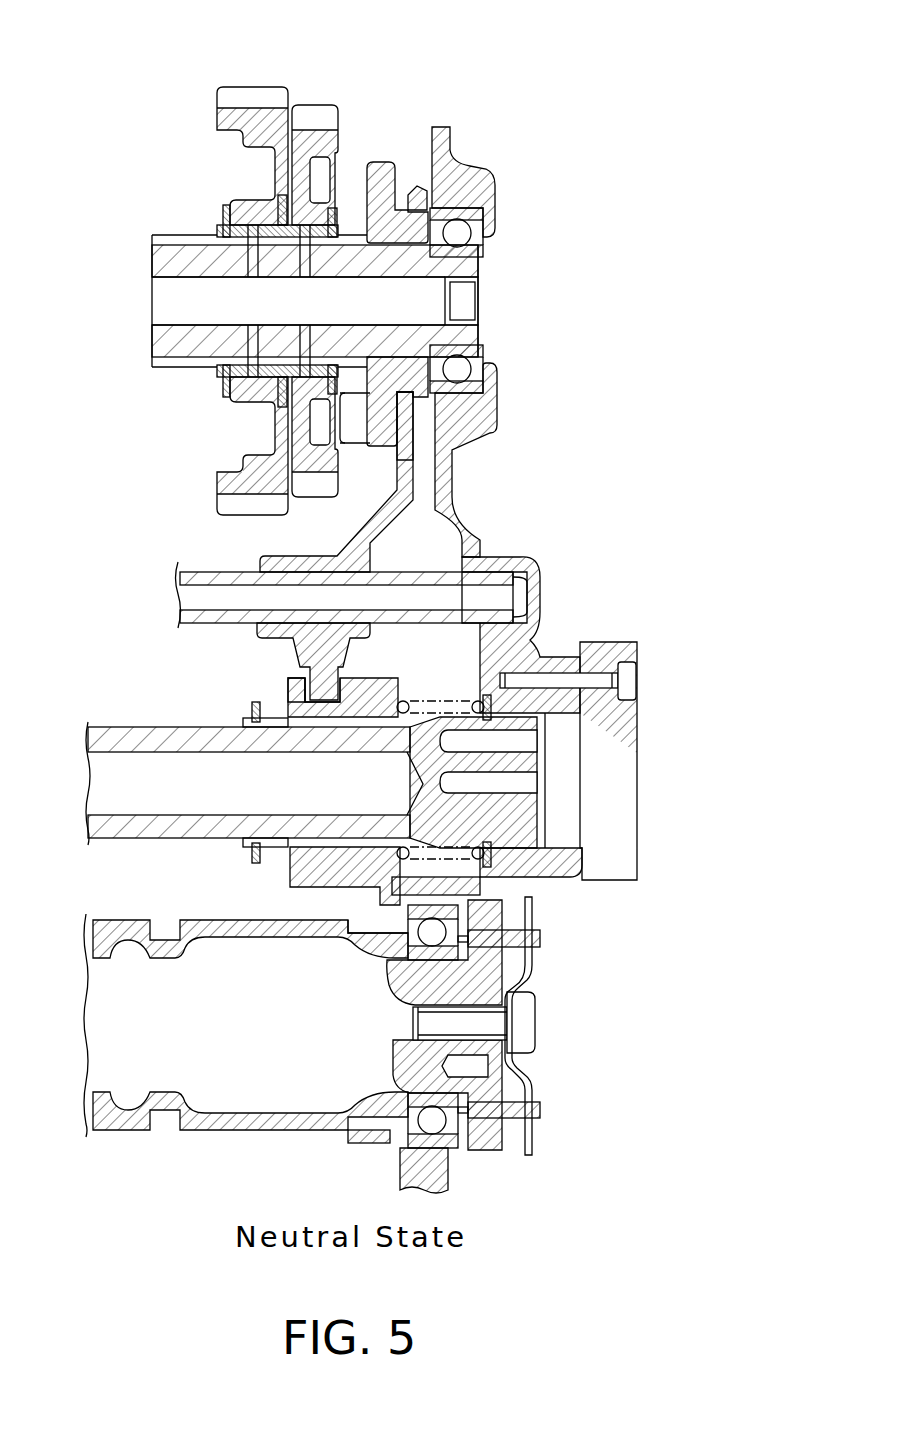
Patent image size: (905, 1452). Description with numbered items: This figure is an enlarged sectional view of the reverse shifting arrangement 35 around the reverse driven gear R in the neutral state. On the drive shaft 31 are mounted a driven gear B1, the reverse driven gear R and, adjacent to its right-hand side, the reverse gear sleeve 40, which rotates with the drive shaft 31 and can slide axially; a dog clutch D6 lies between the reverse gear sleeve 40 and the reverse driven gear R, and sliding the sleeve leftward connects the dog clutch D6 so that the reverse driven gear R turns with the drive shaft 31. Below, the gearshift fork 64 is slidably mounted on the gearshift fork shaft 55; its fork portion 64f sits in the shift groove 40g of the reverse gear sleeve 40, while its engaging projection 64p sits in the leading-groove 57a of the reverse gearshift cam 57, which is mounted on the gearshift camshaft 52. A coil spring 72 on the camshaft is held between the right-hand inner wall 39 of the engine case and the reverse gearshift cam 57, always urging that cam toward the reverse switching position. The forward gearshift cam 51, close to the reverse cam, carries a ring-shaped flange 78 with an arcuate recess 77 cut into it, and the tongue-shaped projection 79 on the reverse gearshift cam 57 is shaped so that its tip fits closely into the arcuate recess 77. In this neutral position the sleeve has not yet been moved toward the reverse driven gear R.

The power transmission unit 35 is at (349, 64).
The driven gear B1 is at (252, 86).
The reverse driven gear R is at (320, 105).
The reverse gear sleeve 40 is at (386, 152).
The shift groove 40g is at (405, 200).
The drive shaft 31 is at (176, 236).
The right-hand inner wall 39 is at (497, 180).
The fork portion 64f is at (413, 453).
The dog clutch D6 is at (352, 455).
The gearshift fork shaft 55 is at (200, 570).
The gearshift fork 64 is at (300, 545).
The engaging projection 64p is at (288, 686).
The leading-groove 57a is at (327, 690).
The coil spring 72 is at (455, 701).
The gearshift camshaft 52 is at (106, 718).
The reverse gearshift cam 57 is at (284, 878).
The tongue-shaped projection 79 is at (378, 898).
The forward gearshift cam 51 is at (101, 910).
The arcuate recess 77 is at (372, 920).
The flange 78 is at (367, 1144).